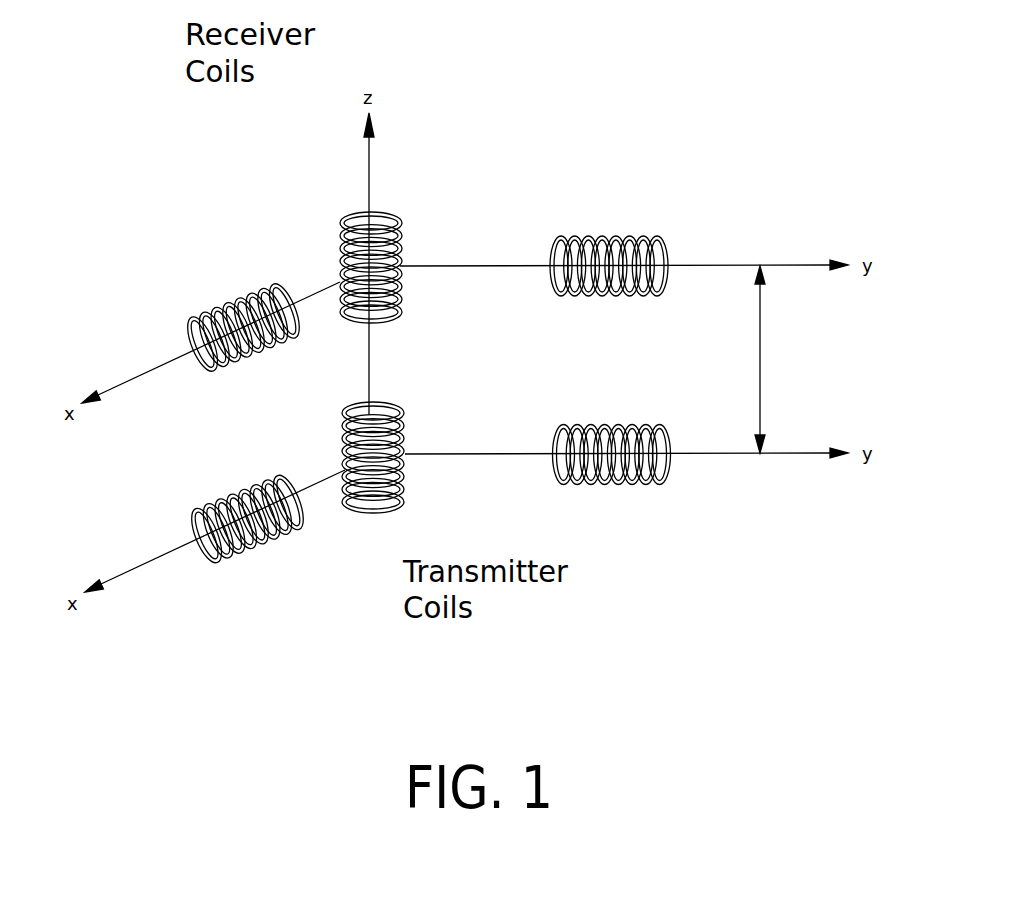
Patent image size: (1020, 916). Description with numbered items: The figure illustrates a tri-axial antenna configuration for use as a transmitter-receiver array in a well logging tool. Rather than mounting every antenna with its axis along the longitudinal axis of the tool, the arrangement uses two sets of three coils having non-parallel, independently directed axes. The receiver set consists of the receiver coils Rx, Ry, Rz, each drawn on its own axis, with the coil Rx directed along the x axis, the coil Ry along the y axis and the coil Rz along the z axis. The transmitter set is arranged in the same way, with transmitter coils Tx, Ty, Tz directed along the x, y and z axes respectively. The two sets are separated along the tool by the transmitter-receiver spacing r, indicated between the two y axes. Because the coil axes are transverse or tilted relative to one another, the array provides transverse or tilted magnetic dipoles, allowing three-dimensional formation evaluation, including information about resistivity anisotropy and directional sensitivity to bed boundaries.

The receiver coil Rx is at (209, 264).
The receiver coil Ry is at (608, 192).
The receiver coil Rz is at (325, 182).
The transmitter coil Tx is at (209, 462).
The transmitter coil Ty is at (617, 394).
The transmitter coil Tz is at (336, 375).
The transmitter-receiver spacing r is at (778, 359).